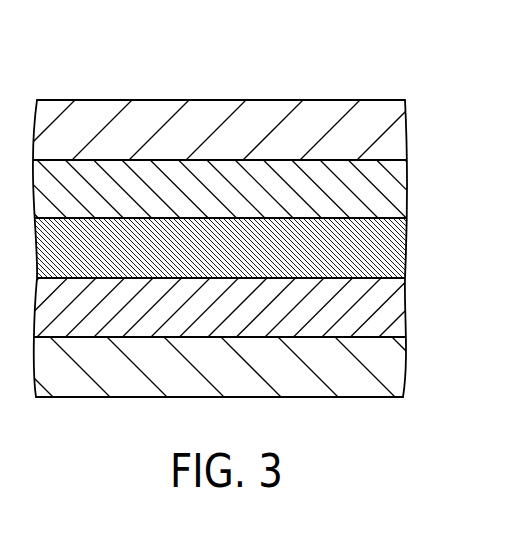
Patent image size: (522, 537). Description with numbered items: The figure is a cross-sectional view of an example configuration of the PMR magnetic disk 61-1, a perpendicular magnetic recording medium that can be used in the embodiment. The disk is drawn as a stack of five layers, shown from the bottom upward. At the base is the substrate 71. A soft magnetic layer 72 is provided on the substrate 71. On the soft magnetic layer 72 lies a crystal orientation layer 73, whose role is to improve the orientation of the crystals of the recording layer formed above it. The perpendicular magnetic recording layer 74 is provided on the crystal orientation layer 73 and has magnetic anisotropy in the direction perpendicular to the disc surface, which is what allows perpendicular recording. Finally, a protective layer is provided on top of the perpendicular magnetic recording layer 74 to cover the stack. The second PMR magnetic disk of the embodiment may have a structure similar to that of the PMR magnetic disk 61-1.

The PMR magnetic disk 61-1 is at (315, 72).
The substrate 71 is at (400, 366).
The soft magnetic layer 72 is at (398, 306).
The crystal orientation layer 73 is at (400, 247).
The perpendicular magnetic recording layer 74 is at (400, 192).